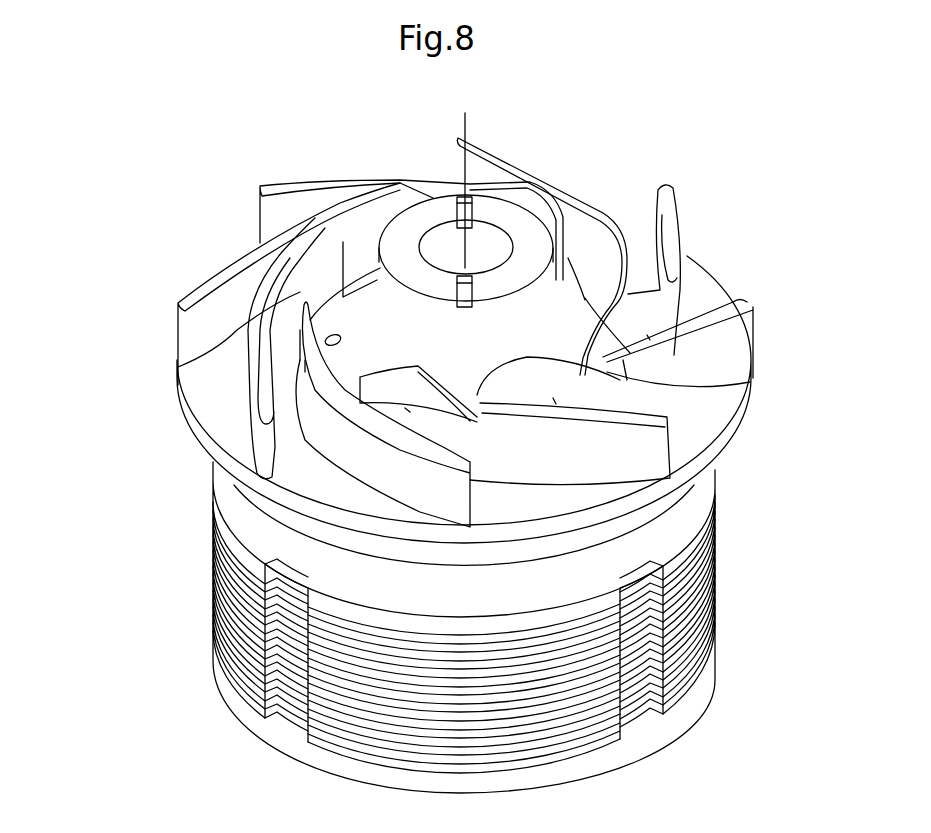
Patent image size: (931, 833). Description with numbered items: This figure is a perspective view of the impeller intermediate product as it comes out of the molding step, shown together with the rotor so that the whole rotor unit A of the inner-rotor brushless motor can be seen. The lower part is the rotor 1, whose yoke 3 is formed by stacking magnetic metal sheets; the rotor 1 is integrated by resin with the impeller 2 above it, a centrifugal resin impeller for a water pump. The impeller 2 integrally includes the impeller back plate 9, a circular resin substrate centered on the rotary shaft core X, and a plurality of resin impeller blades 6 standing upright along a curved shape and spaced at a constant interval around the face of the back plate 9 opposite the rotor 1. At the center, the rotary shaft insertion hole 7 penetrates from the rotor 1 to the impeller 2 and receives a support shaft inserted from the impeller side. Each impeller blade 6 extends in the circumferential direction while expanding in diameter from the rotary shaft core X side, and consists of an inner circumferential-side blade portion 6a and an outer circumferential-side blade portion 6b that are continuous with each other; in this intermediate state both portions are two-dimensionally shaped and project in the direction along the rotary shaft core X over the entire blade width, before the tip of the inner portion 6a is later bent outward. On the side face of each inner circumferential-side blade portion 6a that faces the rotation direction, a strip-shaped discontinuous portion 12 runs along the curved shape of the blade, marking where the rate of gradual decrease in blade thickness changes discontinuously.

The rotor 1 is at (198, 590).
The impeller 2 is at (443, 339).
The yoke 3 is at (695, 635).
The impeller blade 6 is at (340, 162).
The inner circumferential-side blade portion 6a is at (392, 405).
The outer circumferential-side blade portion 6b is at (735, 350).
The rotary shaft insertion hole 7 is at (455, 235).
The impeller back plate 9 is at (190, 419).
The discontinuous portion 12 is at (297, 368).
The rotor unit A is at (157, 170).
The rotary shaft core X is at (464, 176).